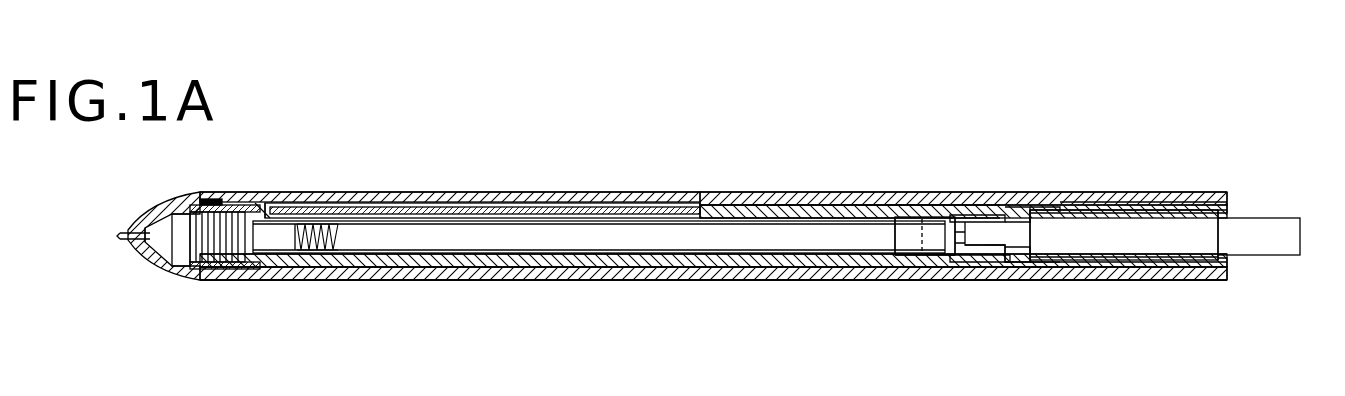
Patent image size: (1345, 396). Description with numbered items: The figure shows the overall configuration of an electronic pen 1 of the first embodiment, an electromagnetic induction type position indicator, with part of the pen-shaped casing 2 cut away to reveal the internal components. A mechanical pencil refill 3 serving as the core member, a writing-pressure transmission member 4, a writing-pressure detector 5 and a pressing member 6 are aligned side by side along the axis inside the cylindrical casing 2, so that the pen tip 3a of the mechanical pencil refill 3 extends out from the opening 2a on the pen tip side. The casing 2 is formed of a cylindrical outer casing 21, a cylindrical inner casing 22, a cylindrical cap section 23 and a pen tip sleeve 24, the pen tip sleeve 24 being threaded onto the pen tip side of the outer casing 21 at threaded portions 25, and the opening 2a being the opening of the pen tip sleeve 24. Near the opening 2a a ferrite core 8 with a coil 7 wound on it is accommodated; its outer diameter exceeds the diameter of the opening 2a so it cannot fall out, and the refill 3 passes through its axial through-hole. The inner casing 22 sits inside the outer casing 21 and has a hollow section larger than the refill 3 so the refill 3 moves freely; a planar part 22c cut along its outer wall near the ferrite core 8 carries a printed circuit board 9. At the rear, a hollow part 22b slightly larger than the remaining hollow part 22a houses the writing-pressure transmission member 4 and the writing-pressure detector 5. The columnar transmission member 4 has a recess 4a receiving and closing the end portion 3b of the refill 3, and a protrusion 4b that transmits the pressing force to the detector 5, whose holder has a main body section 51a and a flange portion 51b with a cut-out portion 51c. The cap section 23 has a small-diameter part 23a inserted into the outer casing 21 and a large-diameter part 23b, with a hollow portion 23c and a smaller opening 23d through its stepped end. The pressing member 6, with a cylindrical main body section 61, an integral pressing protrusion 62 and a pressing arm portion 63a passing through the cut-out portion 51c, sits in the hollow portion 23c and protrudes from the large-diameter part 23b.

The electronic pen 1 is at (795, 177).
The casing 2 is at (1087, 92).
The opening 2a is at (135, 230).
The mechanical pencil refill 3 is at (661, 238).
The pen tip 3a is at (136, 243).
The end portion 3b is at (905, 230).
The writing-pressure transmission member 4 is at (934, 258).
The recess 4a is at (908, 256).
The protrusion 4b is at (957, 256).
The writing-pressure detector 5 is at (973, 215).
The main body section 51a is at (978, 258).
The cut-out portion 51c is at (990, 270).
The flange portion 51b is at (1010, 265).
The pressing member 6 is at (1290, 322).
The main body section 61 is at (1204, 248).
The pressing protrusion 62 is at (1258, 242).
The pressing arm portion 63a is at (1045, 268).
The coil 7 is at (201, 235).
The ferrite core 8 is at (180, 222).
The printed circuit board 9 is at (666, 210).
The outer casing 21 is at (926, 207).
The inner casing 22 is at (950, 212).
The hollow part 22a is at (569, 254).
The hollow part 22b is at (881, 258).
The planar part 22c is at (615, 204).
The cap section 23 is at (998, 137).
The small-diameter part 23a is at (1053, 208).
The large-diameter part 23b is at (1120, 198).
The hollow portion 23c is at (1015, 210).
The opening 23d is at (1230, 214).
The pen tip sleeve 24 is at (193, 268).
The threaded portions 25 is at (206, 205).